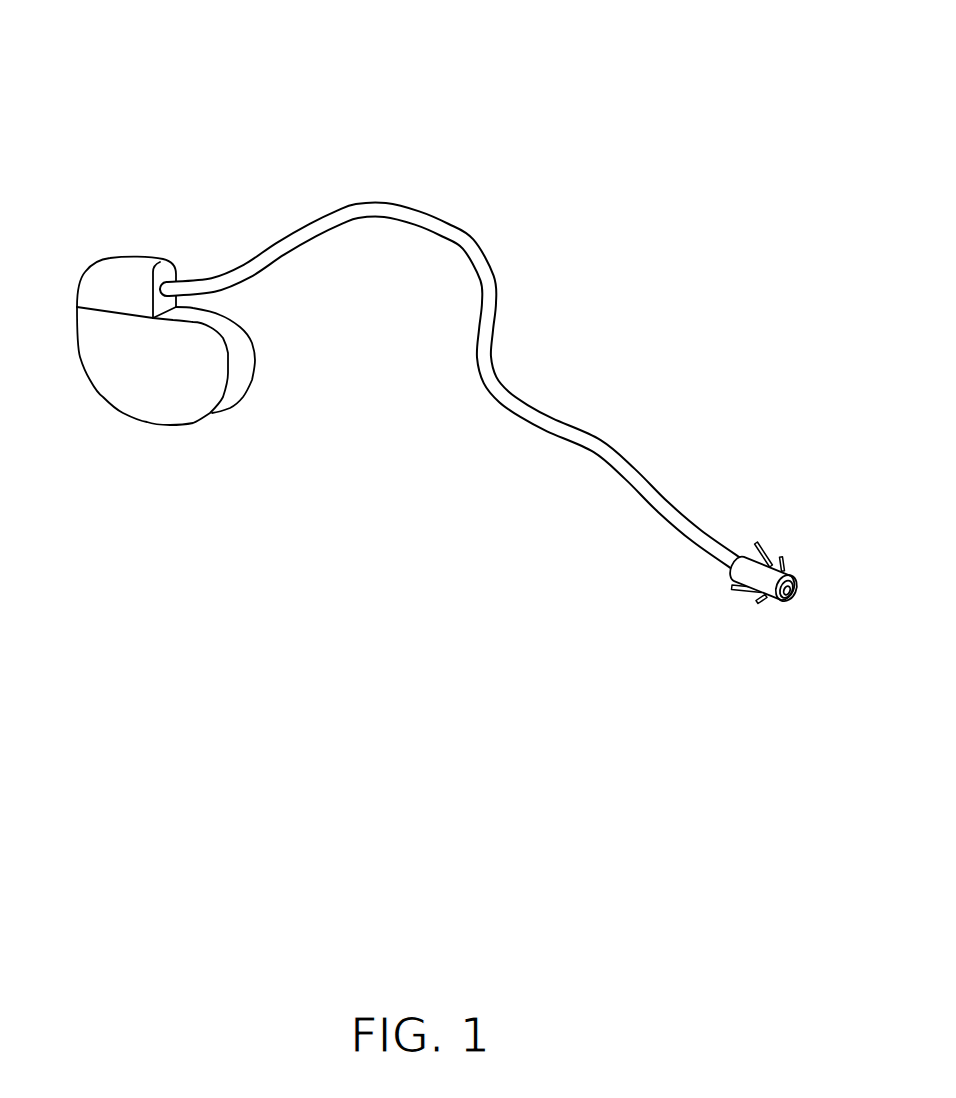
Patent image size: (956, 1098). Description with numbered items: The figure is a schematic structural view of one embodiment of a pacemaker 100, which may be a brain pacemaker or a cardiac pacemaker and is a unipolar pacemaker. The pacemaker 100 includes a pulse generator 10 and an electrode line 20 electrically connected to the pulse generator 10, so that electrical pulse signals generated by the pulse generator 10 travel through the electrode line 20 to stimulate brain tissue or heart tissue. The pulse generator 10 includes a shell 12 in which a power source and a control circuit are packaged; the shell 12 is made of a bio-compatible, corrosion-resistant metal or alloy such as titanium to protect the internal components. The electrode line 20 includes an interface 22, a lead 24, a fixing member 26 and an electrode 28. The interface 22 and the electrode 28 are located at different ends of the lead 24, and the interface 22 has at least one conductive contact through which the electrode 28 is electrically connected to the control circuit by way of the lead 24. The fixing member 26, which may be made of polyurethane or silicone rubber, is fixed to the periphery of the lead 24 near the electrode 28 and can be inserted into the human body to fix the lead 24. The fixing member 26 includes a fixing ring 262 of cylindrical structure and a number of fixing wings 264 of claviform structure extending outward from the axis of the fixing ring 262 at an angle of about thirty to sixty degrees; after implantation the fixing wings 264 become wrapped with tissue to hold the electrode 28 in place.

The pacemaker 100 is at (453, 336).
The pulse generator 10 is at (201, 334).
The shell 12 is at (170, 405).
The interface 22 is at (117, 280).
The electrode line 20 is at (505, 408).
The lead 24 is at (377, 213).
The fixing member 26 is at (780, 551).
The fixing ring 262 is at (748, 562).
The fixing wings 264 is at (762, 558).
The electrode 28 is at (792, 591).